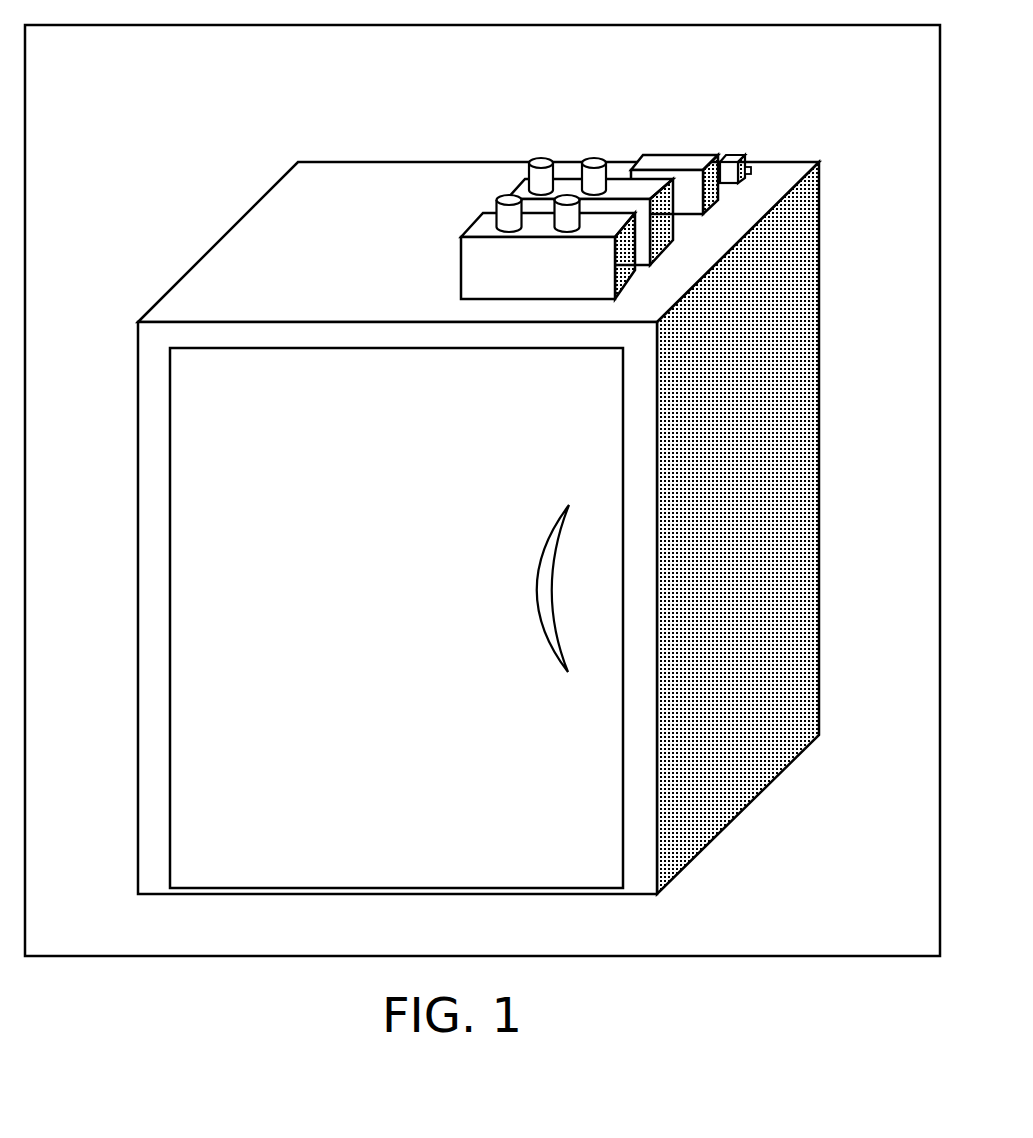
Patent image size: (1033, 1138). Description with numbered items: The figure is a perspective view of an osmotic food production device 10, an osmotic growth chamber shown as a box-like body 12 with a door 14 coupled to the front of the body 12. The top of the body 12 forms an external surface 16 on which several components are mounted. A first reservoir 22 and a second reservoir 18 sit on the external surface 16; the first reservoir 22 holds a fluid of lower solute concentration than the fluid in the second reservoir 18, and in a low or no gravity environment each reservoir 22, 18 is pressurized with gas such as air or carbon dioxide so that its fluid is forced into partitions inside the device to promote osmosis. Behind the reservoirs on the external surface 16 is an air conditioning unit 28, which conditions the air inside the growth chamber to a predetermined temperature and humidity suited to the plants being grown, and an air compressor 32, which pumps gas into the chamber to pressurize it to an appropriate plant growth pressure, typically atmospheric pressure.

The osmotic food production device 10 is at (198, 127).
The body 12 is at (819, 222).
The door 14 is at (170, 593).
The external surface 16 is at (372, 254).
The second reservoir 18 is at (608, 165).
The first reservoir 22 is at (470, 218).
The air conditioning unit 28 is at (693, 155).
The air compressor 32 is at (747, 178).